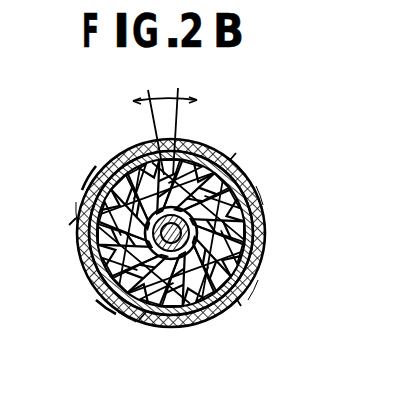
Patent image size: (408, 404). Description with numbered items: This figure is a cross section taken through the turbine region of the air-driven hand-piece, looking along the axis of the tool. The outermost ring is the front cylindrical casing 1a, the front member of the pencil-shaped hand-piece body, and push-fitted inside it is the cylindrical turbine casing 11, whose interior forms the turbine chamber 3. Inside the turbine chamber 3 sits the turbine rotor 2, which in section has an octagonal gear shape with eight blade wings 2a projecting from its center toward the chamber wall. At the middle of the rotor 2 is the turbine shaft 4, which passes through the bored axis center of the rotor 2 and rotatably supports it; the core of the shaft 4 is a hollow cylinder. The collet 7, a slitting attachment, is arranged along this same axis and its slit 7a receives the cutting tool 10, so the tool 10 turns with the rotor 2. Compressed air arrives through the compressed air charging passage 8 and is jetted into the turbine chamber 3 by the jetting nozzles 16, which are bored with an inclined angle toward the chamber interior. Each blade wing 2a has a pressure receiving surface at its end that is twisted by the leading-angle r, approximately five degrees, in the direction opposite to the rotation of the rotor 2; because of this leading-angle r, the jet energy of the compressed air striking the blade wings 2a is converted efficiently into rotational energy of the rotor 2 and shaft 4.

The leading-angle r is at (162, 97).
The front cylindrical casing 1a is at (252, 175).
The turbine rotor 2 is at (136, 149).
The blade wings 2a is at (102, 170).
The turbine chamber 3 is at (204, 237).
The turbine shaft 4 is at (86, 280).
The collet 7 is at (163, 327).
The slit 7a is at (252, 220).
The compressed air charging passage 8 is at (78, 193).
The cutting tool 10 is at (206, 327).
The turbine casing 11 is at (204, 150).
The jetting nozzle 16 is at (69, 225).